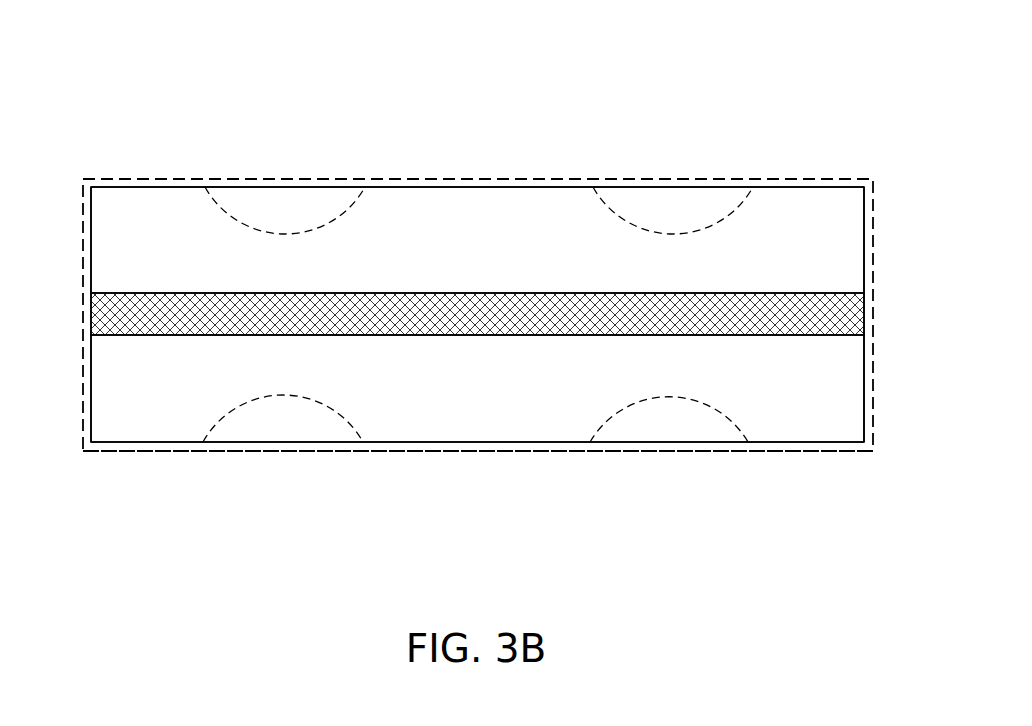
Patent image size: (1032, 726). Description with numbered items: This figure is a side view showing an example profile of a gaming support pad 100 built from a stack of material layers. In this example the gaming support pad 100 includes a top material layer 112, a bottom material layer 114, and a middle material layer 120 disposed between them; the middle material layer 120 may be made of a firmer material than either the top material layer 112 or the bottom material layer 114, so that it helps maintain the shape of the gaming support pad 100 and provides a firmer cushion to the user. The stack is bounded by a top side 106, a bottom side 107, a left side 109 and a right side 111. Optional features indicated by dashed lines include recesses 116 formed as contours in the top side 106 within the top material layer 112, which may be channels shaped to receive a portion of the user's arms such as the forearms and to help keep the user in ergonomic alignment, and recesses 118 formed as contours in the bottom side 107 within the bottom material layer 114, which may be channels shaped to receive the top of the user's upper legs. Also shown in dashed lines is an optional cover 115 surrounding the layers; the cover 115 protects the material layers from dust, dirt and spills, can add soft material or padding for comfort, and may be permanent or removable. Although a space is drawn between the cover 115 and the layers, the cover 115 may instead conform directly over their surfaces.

The gaming support pad 100 is at (812, 128).
The top side 106 is at (161, 187).
The bottom side 107 is at (780, 442).
The left side 109 is at (91, 364).
The right side 111 is at (864, 381).
The top material layer 112 is at (411, 268).
The bottom material layer 114 is at (418, 421).
The cover 115 is at (123, 451).
The recesses 116 is at (698, 230).
The recesses 118 is at (677, 395).
The middle material layer 120 is at (477, 314).